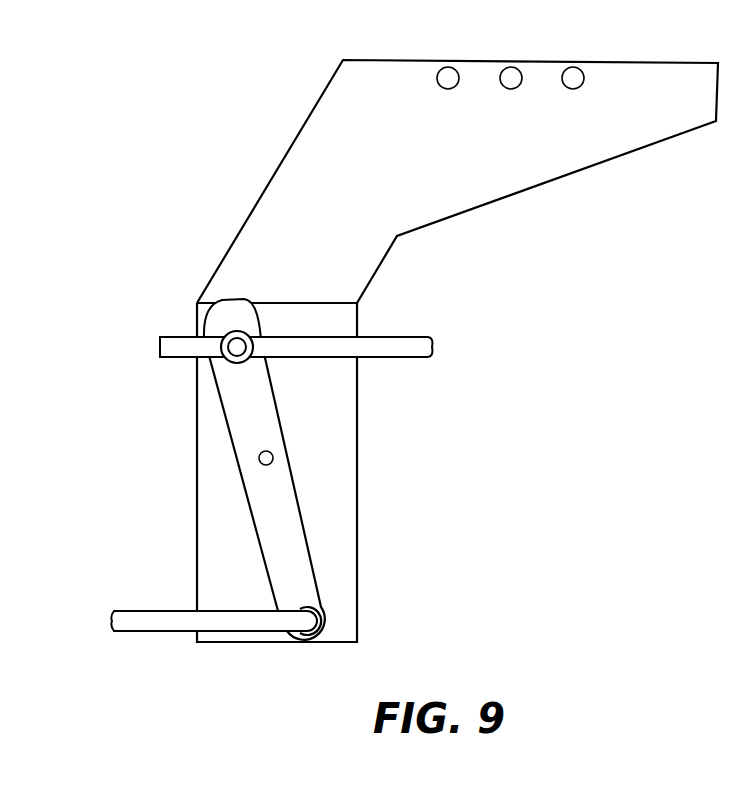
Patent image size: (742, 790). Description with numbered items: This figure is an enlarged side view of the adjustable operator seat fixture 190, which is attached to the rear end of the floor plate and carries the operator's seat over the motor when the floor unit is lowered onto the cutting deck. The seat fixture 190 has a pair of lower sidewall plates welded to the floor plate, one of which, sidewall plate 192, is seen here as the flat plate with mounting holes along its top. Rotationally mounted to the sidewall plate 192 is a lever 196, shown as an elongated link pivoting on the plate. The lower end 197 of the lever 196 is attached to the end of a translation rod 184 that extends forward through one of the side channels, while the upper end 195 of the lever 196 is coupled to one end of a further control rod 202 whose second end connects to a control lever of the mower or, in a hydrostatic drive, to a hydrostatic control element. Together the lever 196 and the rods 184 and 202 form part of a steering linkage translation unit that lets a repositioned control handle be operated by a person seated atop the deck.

The seat fixture 190 is at (272, 168).
The lower sidewall plate 192 is at (357, 493).
The upper end of lever 195 is at (244, 316).
The lever 196 is at (230, 427).
The lower end of lever 197 is at (330, 620).
The control rod 202 is at (398, 337).
The translation rod 184 is at (137, 605).